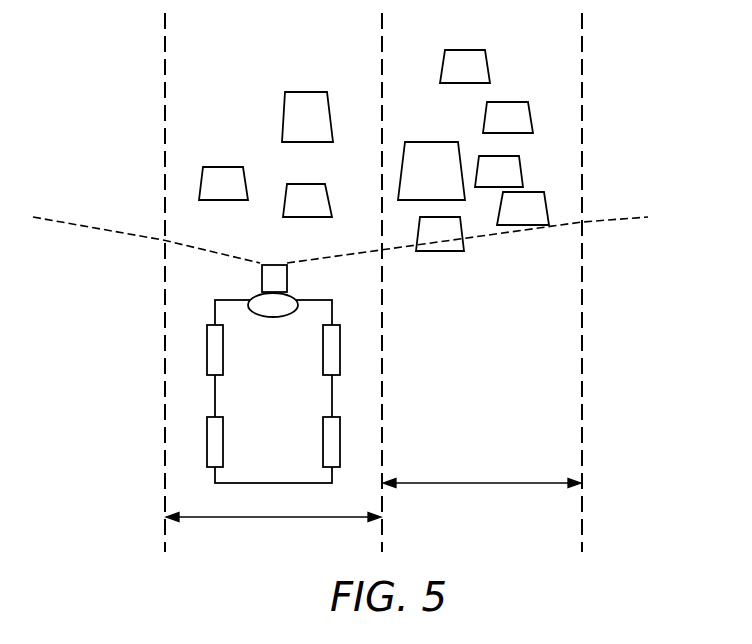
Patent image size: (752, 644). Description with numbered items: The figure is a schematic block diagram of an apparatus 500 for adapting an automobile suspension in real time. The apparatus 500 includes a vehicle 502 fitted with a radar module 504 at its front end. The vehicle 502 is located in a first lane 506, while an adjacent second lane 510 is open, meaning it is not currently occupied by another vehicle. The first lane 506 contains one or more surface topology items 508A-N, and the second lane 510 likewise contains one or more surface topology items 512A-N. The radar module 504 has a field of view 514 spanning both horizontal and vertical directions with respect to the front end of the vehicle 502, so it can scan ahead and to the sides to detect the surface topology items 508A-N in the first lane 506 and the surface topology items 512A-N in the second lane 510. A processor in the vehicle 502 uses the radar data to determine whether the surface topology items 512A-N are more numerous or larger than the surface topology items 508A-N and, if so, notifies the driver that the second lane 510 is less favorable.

The apparatus 500 is at (112, 67).
The vehicle 502 is at (290, 416).
The radar module 504 is at (262, 277).
The first lane 506 is at (275, 518).
The surface topology items 508A-N is at (307, 184).
The second lane 510 is at (490, 482).
The surface topology items 512A-N is at (546, 206).
The field of view 514 is at (102, 230).